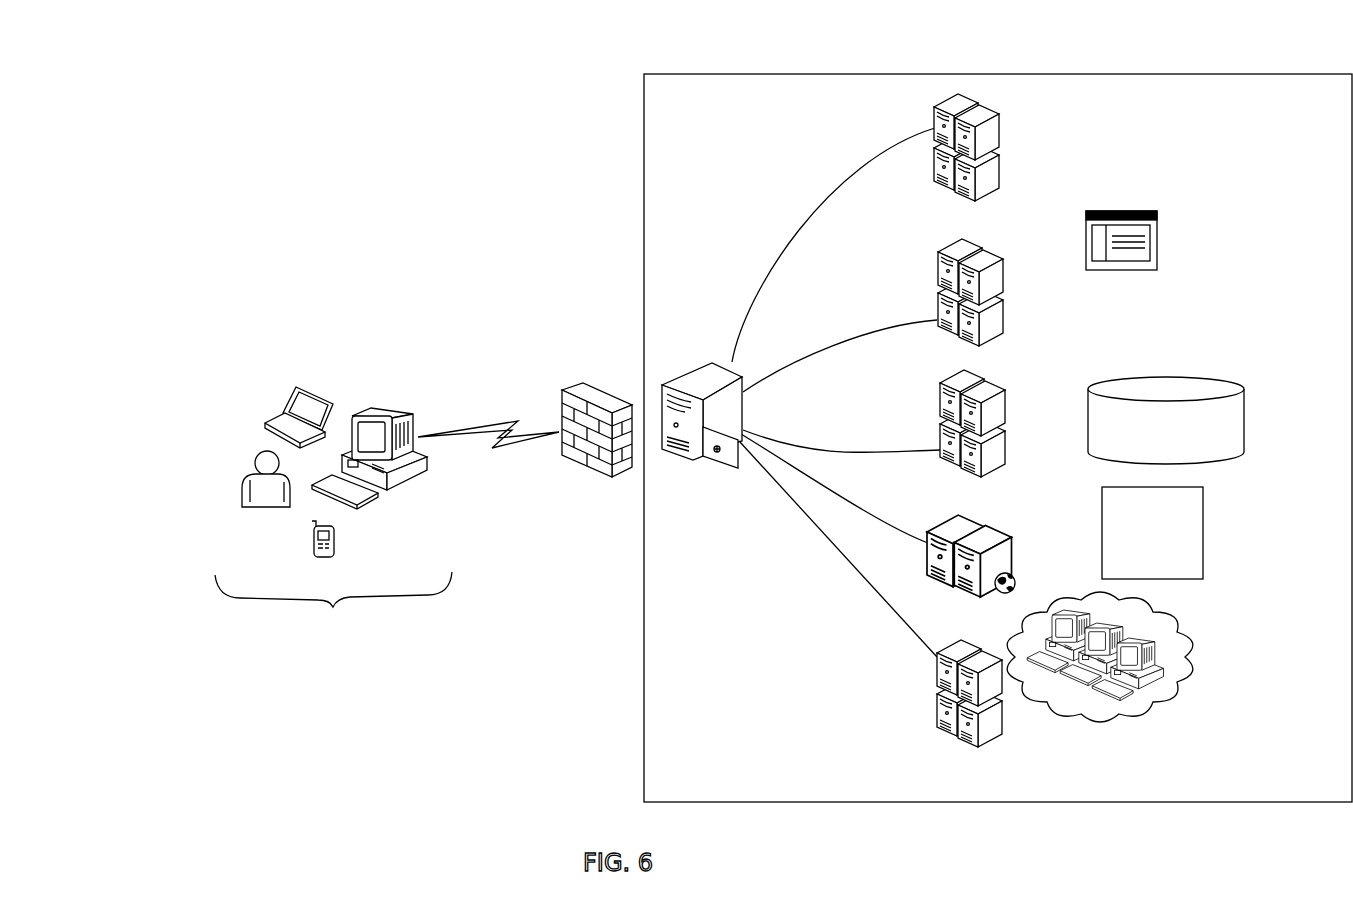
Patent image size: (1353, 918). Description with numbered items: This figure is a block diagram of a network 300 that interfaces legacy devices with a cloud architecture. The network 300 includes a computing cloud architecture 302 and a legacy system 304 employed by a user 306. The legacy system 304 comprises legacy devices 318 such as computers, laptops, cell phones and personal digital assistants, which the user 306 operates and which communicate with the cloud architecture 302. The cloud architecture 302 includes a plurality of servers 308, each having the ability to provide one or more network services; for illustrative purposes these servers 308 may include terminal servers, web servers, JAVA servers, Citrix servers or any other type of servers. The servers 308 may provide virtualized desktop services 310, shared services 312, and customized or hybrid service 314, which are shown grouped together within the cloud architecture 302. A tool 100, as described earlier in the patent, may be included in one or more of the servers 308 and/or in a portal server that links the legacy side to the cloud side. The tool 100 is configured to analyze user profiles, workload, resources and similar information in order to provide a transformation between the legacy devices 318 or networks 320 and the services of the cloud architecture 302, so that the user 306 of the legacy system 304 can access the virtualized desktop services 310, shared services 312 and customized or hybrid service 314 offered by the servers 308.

The network 300 is at (817, 22).
The computing cloud architecture 302 is at (1108, 74).
The legacy system 304 is at (333, 607).
The user 306 is at (243, 492).
The servers 308 is at (1001, 170).
The virtualized desktop services 310 is at (1185, 656).
The shared services 312 is at (1122, 208).
The customized or hybrid service 314 is at (1203, 530).
The legacy devices 318 is at (280, 412).
The networks 320 is at (1165, 378).
The tool 100 is at (743, 429).